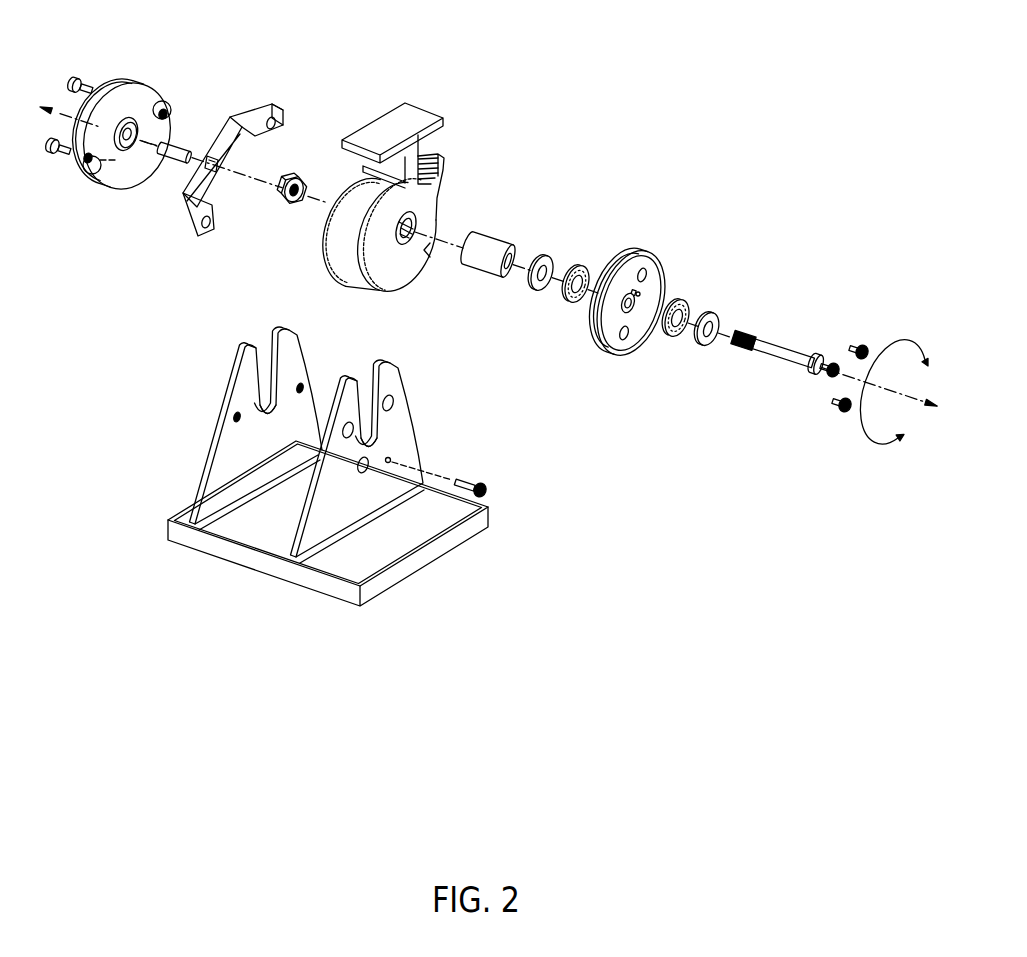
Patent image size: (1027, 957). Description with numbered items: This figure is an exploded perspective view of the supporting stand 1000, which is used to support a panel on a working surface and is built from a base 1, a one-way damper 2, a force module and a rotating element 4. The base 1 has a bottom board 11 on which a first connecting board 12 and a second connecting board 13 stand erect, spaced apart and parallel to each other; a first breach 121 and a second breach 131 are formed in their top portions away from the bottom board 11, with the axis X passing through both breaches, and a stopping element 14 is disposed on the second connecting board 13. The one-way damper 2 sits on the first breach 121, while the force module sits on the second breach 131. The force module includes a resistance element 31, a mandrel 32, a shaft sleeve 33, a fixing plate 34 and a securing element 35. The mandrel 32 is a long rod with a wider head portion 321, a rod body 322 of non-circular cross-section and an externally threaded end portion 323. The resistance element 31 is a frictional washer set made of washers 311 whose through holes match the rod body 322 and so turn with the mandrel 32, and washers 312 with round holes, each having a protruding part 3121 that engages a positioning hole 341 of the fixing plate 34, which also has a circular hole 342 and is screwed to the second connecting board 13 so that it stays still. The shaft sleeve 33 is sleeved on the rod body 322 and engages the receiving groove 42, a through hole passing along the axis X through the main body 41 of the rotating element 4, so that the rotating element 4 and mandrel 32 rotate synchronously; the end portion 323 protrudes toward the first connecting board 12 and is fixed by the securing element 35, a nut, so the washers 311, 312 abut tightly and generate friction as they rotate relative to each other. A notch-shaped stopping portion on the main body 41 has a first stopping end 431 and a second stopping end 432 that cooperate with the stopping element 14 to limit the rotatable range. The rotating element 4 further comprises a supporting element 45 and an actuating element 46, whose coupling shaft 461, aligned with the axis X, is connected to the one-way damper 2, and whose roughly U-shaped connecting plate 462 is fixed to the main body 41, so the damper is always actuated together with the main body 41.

The supporting stand 1000 is at (788, 73).
The base 1 is at (375, 562).
The bottom board 11 is at (252, 533).
The first connecting board 12 is at (237, 453).
The first breach 121 is at (264, 381).
The second connecting board 13 is at (398, 425).
The second breach 131 is at (368, 398).
The stopping element 14 is at (478, 482).
The one-way damper 2 is at (112, 84).
The rotating element 4 is at (402, 74).
The main body 41 is at (384, 272).
The receiving groove 42 is at (413, 222).
The first stopping end 431 is at (440, 178).
The second stopping end 432 is at (427, 256).
The supporting element 45 is at (380, 128).
The actuating element 46 is at (287, 79).
The coupling shaft 461 is at (190, 148).
The connecting plate 462 is at (246, 118).
The securing element 35 is at (302, 176).
The shaft sleeve 33 is at (496, 243).
The resistance element 31 is at (549, 186).
The washers 311 is at (548, 258).
The washers 312 is at (592, 263).
The protruding part 3121 is at (569, 297).
The fixing plate 34 is at (632, 352).
The positioning holes 341 is at (612, 329).
The circular hole 342 is at (616, 352).
The mandrel 32 is at (769, 360).
The head portion 321 is at (813, 354).
The rod body 322 is at (777, 349).
The end portion 323 is at (741, 330).